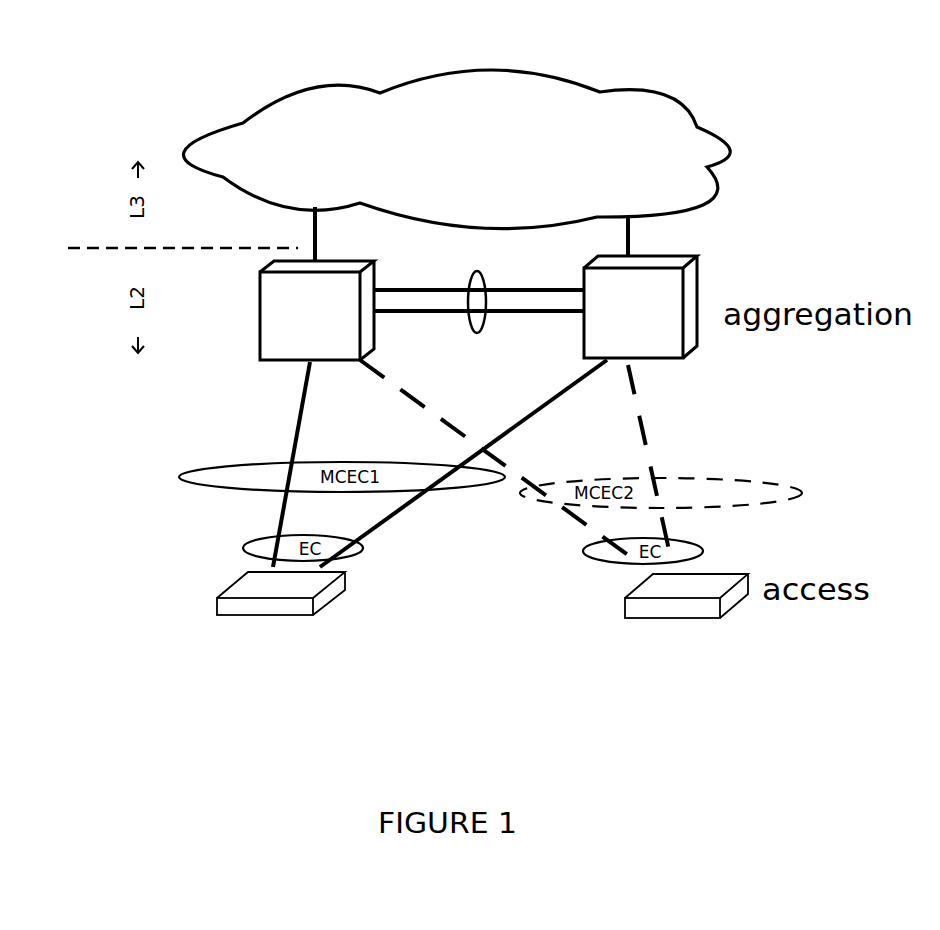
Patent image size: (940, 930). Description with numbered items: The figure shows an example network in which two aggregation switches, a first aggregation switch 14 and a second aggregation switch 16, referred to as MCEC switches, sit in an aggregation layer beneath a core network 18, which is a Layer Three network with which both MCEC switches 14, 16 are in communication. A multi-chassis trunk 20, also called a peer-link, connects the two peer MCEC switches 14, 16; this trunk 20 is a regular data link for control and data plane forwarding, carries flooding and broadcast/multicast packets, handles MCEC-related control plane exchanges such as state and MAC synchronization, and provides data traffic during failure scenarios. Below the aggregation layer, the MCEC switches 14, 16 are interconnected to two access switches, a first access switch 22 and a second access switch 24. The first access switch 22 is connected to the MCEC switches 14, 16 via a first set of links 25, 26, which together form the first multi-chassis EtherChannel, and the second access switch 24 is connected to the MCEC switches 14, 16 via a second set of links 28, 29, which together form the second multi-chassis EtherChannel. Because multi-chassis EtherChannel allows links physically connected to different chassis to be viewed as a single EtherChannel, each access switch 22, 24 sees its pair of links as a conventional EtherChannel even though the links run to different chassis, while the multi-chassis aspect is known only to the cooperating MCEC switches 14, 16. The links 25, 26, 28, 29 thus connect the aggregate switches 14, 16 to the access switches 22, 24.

The core network 18 is at (500, 72).
The first aggregation switch 14 is at (260, 318).
The second aggregation switch 16 is at (697, 272).
The multi-chassis trunk 20 is at (470, 327).
The link 25 is at (295, 399).
The link 26 is at (570, 382).
The link 28 is at (428, 398).
The link 29 is at (639, 404).
The first access switch 22 is at (217, 597).
The second access switch 24 is at (625, 604).